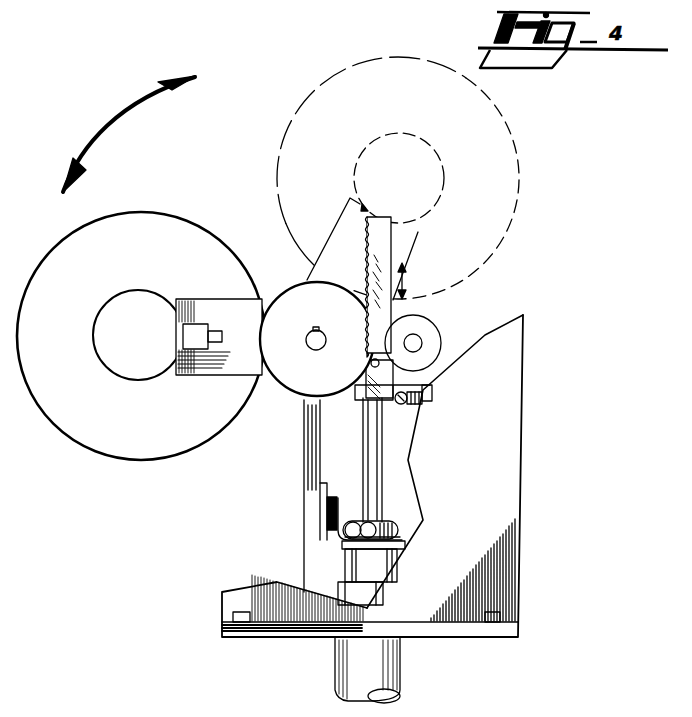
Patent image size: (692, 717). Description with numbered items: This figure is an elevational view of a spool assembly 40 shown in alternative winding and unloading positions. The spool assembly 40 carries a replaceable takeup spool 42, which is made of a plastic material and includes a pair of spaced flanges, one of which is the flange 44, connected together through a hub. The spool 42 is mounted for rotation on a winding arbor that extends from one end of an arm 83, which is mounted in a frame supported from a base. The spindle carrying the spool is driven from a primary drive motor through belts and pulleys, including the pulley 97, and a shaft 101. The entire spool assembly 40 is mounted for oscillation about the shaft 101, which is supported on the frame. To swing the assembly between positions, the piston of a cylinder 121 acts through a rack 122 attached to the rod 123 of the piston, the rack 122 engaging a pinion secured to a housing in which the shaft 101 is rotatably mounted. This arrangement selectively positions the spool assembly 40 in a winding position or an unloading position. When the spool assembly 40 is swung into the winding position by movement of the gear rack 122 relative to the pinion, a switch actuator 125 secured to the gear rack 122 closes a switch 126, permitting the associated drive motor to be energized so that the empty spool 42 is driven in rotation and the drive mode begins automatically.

The spool assembly 40 is at (525, 218).
The takeup spool 42 is at (163, 214).
The flange 44 is at (185, 213).
The arm 83 is at (249, 310).
The pulley 97 is at (316, 352).
The shaft 101 is at (275, 383).
The cylinder 121 is at (398, 688).
The rack 122 is at (394, 223).
The rod 123 is at (368, 441).
The switch actuator 125 is at (435, 385).
The switch 126 is at (430, 388).